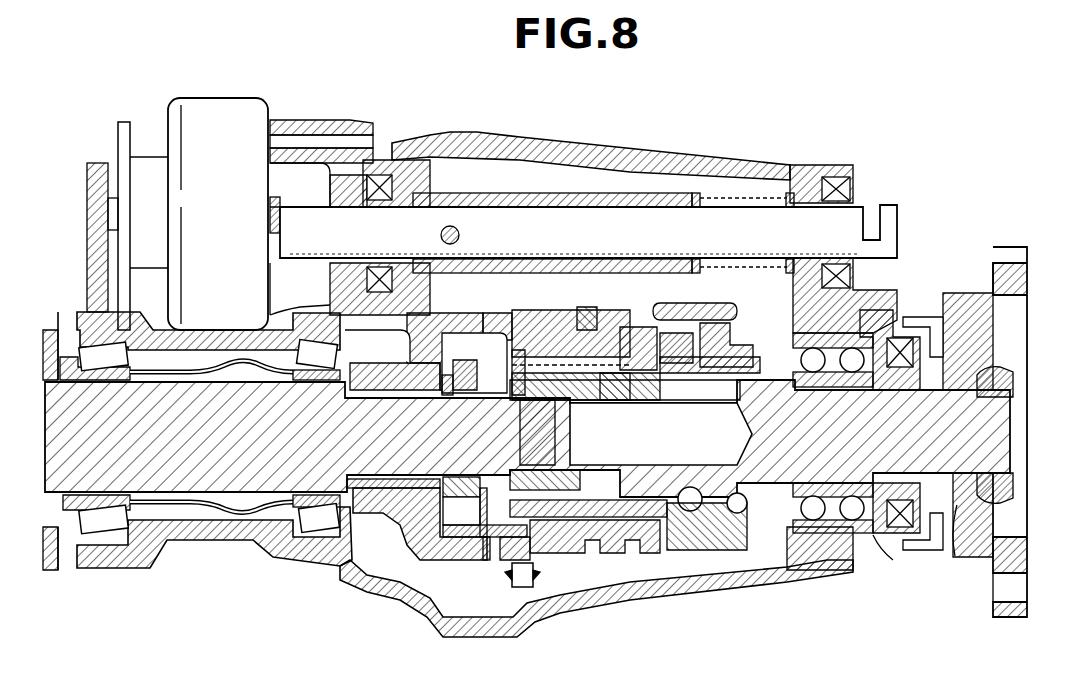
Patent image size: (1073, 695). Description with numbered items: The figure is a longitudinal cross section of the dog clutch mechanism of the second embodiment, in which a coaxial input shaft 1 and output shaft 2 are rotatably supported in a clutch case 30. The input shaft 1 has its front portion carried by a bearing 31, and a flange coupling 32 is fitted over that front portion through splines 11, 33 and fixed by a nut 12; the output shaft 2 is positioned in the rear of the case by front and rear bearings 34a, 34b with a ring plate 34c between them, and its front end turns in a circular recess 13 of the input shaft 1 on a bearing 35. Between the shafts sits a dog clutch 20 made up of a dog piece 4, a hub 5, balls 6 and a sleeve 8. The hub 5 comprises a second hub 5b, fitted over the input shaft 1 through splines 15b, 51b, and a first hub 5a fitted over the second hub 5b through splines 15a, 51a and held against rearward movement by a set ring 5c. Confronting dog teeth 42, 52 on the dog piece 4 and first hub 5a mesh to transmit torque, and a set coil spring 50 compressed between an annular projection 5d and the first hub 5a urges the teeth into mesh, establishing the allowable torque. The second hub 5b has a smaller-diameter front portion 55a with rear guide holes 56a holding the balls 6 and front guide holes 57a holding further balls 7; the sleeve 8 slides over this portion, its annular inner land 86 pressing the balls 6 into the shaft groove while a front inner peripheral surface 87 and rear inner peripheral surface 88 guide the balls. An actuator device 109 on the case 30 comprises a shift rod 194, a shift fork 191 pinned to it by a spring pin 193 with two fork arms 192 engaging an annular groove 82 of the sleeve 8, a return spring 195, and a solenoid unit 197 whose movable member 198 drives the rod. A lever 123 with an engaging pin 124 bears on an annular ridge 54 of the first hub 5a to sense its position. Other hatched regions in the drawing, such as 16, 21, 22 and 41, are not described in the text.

The input shaft 1 is at (1018, 432).
The output shaft 2 is at (188, 490).
The dog piece 4 is at (420, 315).
The hub 5 is at (572, 240).
The first hub 5a is at (520, 345).
The second hub 5b is at (648, 540).
The set ring 5c is at (500, 528).
The annular projection 5d is at (660, 383).
The balls 6 is at (690, 490).
The balls 7 is at (758, 550).
The sleeve 8 is at (752, 550).
The splines 11 is at (953, 546).
The nut 12 is at (1000, 380).
The circular recess 13 is at (502, 424).
The splines 15a is at (625, 378).
The splines 15b is at (583, 493).
The hub 16 is at (688, 380).
The dog clutch 20 is at (430, 583).
The housing wall 21 is at (420, 524).
The bearing 22 is at (472, 372).
The clutch case 30 is at (628, 158).
The bearing 31 is at (895, 550).
The flange coupling 32 is at (1020, 617).
The splines 33 is at (957, 355).
The front bearing 34a is at (315, 532).
The rear bearing 34b is at (105, 520).
The seal 34c is at (236, 512).
The bearing 35 is at (553, 410).
The bearing 41 is at (383, 375).
The dog teeth 42 is at (480, 318).
The set coil spring 50 is at (636, 553).
The splines 51a is at (590, 310).
The splines 51b is at (584, 392).
The dog teeth 52 is at (480, 560).
The annular ridge 54 is at (488, 560).
The smaller-diameter front portion 55a is at (793, 345).
The guide holes 56a is at (697, 550).
The guide holes 57a is at (795, 545).
The annular groove 82 is at (735, 550).
The annular inner land 86 is at (700, 380).
The front inner peripheral surface 87 is at (740, 332).
The rear inner peripheral surface 88 is at (670, 340).
The actuator device 109 is at (302, 102).
The lever 123 is at (540, 578).
The engaging pin 124 is at (527, 587).
The shift fork 191 is at (568, 198).
The fork arms 192 is at (705, 310).
The spring pin 193 is at (452, 226).
The shift rod 194 is at (385, 225).
The return spring 195 is at (698, 198).
The solenoid unit 197 is at (232, 105).
The movable member 198 is at (270, 212).